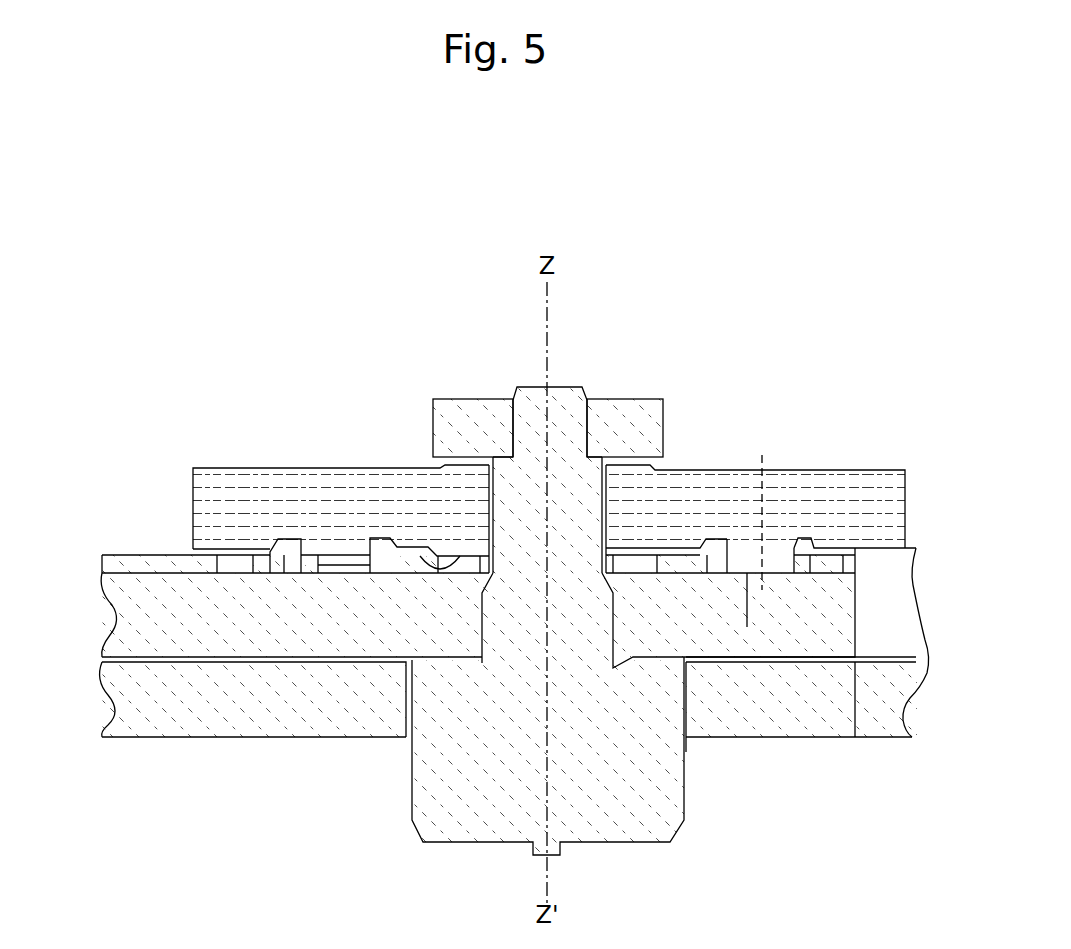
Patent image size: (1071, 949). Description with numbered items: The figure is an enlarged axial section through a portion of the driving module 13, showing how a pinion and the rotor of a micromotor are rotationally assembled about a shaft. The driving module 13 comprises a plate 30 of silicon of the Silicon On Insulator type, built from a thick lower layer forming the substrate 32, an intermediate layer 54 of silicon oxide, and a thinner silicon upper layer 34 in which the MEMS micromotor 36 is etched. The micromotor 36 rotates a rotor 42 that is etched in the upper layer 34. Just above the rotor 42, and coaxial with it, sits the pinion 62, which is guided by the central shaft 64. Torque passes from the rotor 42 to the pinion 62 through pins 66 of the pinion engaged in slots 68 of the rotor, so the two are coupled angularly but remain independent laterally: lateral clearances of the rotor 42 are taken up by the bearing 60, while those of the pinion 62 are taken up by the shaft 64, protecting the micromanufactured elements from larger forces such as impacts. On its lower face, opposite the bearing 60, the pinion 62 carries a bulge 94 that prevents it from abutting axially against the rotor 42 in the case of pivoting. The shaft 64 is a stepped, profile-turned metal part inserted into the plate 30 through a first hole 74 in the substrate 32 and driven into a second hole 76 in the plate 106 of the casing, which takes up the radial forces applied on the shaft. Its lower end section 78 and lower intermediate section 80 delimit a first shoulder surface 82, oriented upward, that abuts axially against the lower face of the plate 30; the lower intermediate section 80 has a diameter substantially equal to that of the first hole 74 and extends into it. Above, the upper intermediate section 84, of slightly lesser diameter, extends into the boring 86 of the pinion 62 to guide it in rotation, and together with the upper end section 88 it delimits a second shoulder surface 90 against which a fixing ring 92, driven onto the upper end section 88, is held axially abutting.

The driving module 13 is at (180, 385).
The micromotor 36 is at (325, 405).
The pinion 62 is at (420, 460).
The upper end section 88 is at (512, 445).
The upper intermediate section 84 is at (518, 480).
The shaft 64 is at (576, 377).
The second shoulder surface 90 is at (627, 450).
The fixing ring 92 is at (650, 398).
The rotor 42 is at (268, 540).
The slots 68 is at (293, 563).
The bulge 94 is at (422, 562).
The boring 86 is at (655, 545).
The bearing 60 is at (660, 657).
The first shoulder surface 82 is at (745, 560).
The upper layer 34 is at (102, 563).
The intermediate layer 54 is at (100, 570).
The plate 30 is at (108, 617).
The first hole 74 is at (480, 625).
The substrate 32 is at (125, 648).
The plate of the casing 106 is at (185, 745).
The pins 66 is at (318, 560).
The lower intermediate section 80 is at (510, 635).
The second hole 76 is at (683, 707).
The lower end section 78 is at (613, 793).